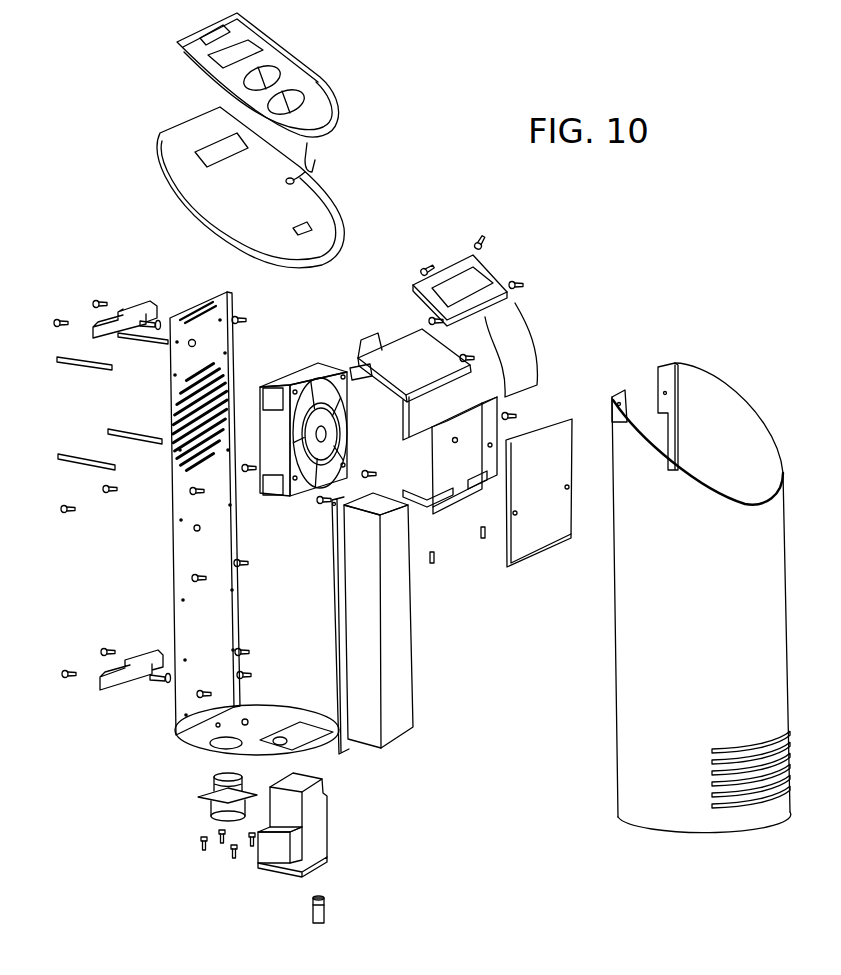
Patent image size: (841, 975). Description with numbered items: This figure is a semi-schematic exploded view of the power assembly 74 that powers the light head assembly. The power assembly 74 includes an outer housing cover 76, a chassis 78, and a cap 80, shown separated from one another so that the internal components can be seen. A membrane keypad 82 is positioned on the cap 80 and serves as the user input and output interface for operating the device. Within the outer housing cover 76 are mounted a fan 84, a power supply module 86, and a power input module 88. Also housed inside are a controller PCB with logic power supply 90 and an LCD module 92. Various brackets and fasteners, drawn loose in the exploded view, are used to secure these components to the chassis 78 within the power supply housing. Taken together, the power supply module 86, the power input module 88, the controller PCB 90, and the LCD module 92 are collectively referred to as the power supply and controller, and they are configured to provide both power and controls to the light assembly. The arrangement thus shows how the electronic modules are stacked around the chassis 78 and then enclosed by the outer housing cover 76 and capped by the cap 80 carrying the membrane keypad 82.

The power assembly 74 is at (400, 211).
The outer housing cover 76 is at (716, 421).
The chassis 78 is at (222, 292).
The cap 80 is at (197, 138).
The membrane keypad 82 is at (308, 110).
The fan 84 is at (312, 373).
The power supply module 86 is at (398, 648).
The power input module 88 is at (317, 833).
The controller PCB with logic power supply 90 is at (533, 537).
The LCD module 92 is at (500, 295).